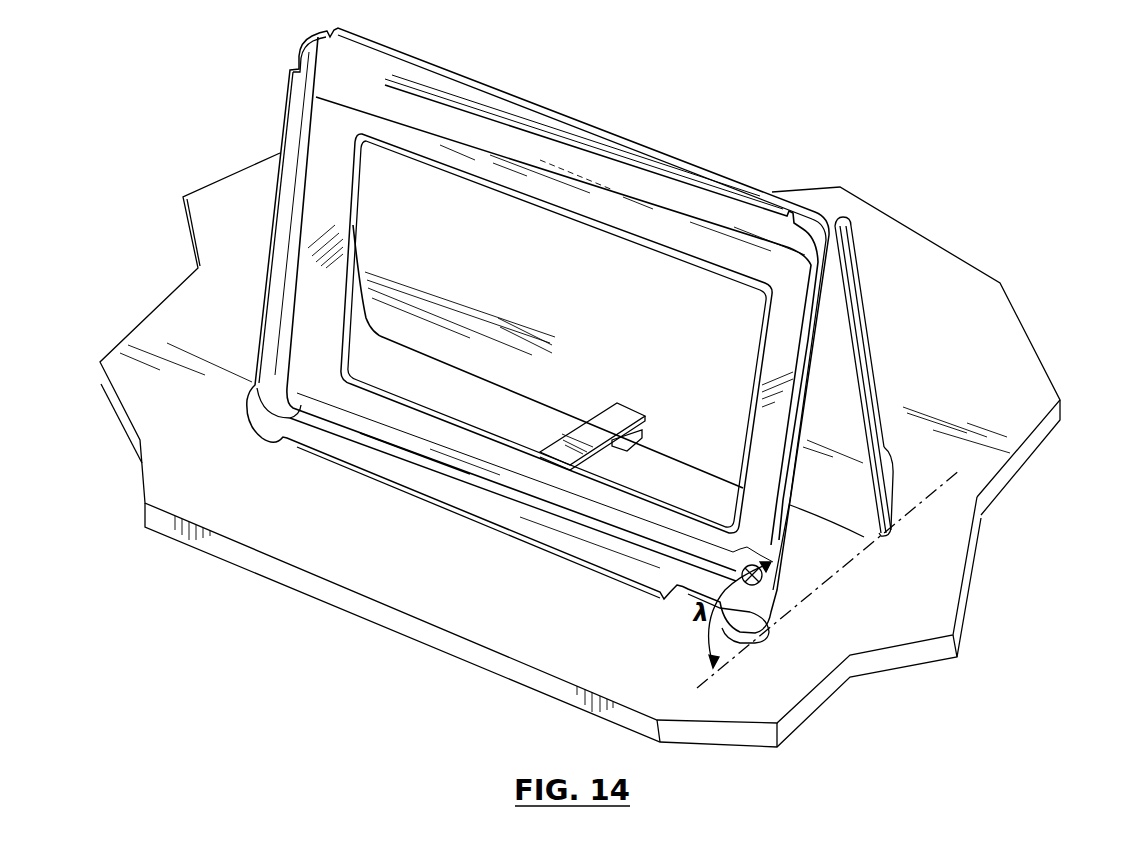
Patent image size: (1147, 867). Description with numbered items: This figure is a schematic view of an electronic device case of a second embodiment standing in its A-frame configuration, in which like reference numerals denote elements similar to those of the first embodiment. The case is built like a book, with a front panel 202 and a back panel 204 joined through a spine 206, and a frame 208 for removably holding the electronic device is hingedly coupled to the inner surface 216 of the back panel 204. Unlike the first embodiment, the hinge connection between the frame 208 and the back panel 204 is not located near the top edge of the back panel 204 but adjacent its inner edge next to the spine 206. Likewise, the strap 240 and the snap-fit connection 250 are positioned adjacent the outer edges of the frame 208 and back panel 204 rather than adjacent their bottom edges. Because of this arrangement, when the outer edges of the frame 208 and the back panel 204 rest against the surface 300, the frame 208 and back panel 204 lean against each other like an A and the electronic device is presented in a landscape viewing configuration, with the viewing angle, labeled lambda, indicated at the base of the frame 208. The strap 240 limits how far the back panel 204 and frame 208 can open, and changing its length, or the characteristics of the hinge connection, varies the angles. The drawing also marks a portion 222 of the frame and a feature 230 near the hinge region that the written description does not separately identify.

The back panel 202 is at (863, 320).
The back panel 204 is at (862, 503).
The spine 206 is at (827, 210).
The frame 208 is at (297, 122).
The display window 216 is at (502, 278).
The lower frame edge 222 is at (463, 482).
The strut foot 230 is at (893, 458).
The strap 240 is at (603, 419).
The snap-fit connection 250 is at (607, 447).
The surface 300 is at (296, 535).